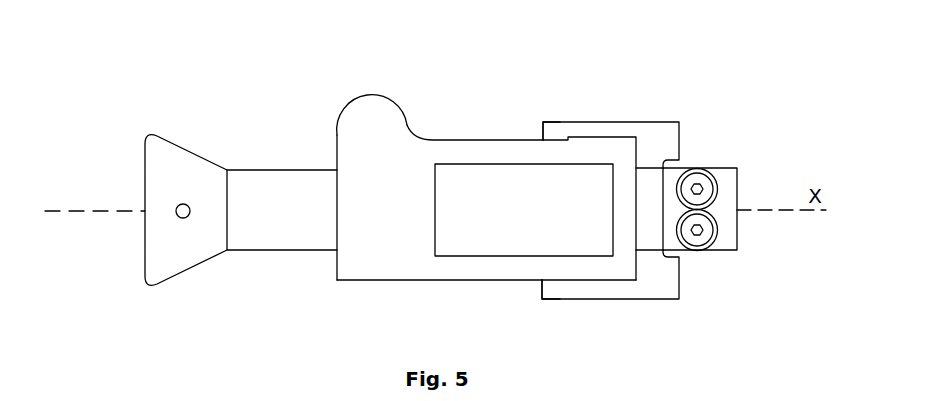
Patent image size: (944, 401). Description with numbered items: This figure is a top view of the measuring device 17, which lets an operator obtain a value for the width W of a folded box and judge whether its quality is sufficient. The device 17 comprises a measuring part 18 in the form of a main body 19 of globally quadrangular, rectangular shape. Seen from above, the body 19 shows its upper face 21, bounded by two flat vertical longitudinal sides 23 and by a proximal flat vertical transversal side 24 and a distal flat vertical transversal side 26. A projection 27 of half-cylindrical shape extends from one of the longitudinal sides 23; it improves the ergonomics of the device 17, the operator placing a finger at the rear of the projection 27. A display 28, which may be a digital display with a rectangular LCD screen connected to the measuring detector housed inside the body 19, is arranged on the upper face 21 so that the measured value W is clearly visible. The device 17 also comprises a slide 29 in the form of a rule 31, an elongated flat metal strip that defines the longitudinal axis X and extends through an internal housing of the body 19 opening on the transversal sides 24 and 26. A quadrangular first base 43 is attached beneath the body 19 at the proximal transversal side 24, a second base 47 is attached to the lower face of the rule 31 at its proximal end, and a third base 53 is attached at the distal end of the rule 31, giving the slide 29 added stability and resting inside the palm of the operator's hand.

The measuring device 17 is at (328, 73).
The measuring part 18 is at (467, 283).
The main body 19 is at (436, 139).
The upper face 21 is at (352, 262).
The flat vertical longitudinal sides 23 is at (549, 140).
The proximal flat vertical transversal side 24 is at (641, 153).
The distal flat vertical transversal side 26 is at (337, 180).
The projection 27 is at (397, 104).
The display 28 is at (585, 189).
The slide 29 is at (262, 169).
The rule 31 is at (262, 253).
The first base 43 is at (598, 300).
The second base 47 is at (737, 168).
The third base 53 is at (148, 281).